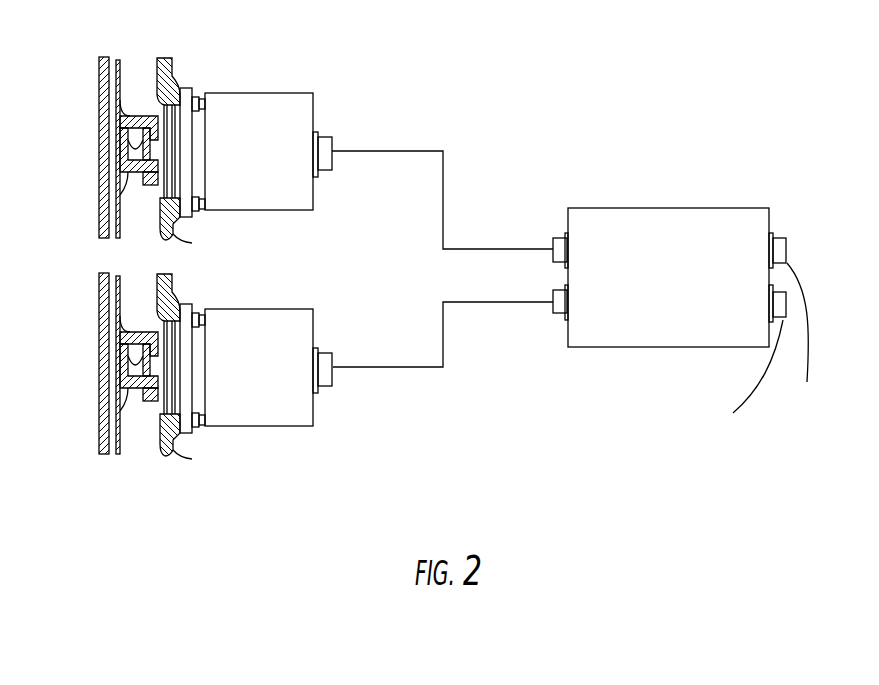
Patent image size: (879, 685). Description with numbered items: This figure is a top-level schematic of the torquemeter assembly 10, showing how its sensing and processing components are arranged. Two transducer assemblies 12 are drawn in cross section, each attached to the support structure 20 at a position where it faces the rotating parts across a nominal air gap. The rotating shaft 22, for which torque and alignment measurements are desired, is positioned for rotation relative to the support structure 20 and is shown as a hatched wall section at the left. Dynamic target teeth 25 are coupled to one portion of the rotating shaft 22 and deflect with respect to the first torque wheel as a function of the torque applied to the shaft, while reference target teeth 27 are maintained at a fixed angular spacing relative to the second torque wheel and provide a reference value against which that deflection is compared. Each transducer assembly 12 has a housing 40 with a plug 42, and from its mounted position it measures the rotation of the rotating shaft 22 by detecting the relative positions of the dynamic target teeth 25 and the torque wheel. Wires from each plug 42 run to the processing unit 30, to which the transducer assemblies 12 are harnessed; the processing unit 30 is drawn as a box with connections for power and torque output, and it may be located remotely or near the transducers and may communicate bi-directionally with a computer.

The torquemeter assembly 10 is at (626, 134).
The transducer assembly 12 is at (295, 113).
The support structure 20 is at (165, 60).
The rotating shaft 22 is at (100, 123).
The dynamic target teeth 25 is at (155, 117).
The reference target teeth 27 is at (153, 185).
The processing unit 30 is at (698, 208).
The housing 40 is at (238, 93).
The plug 42 is at (330, 135).